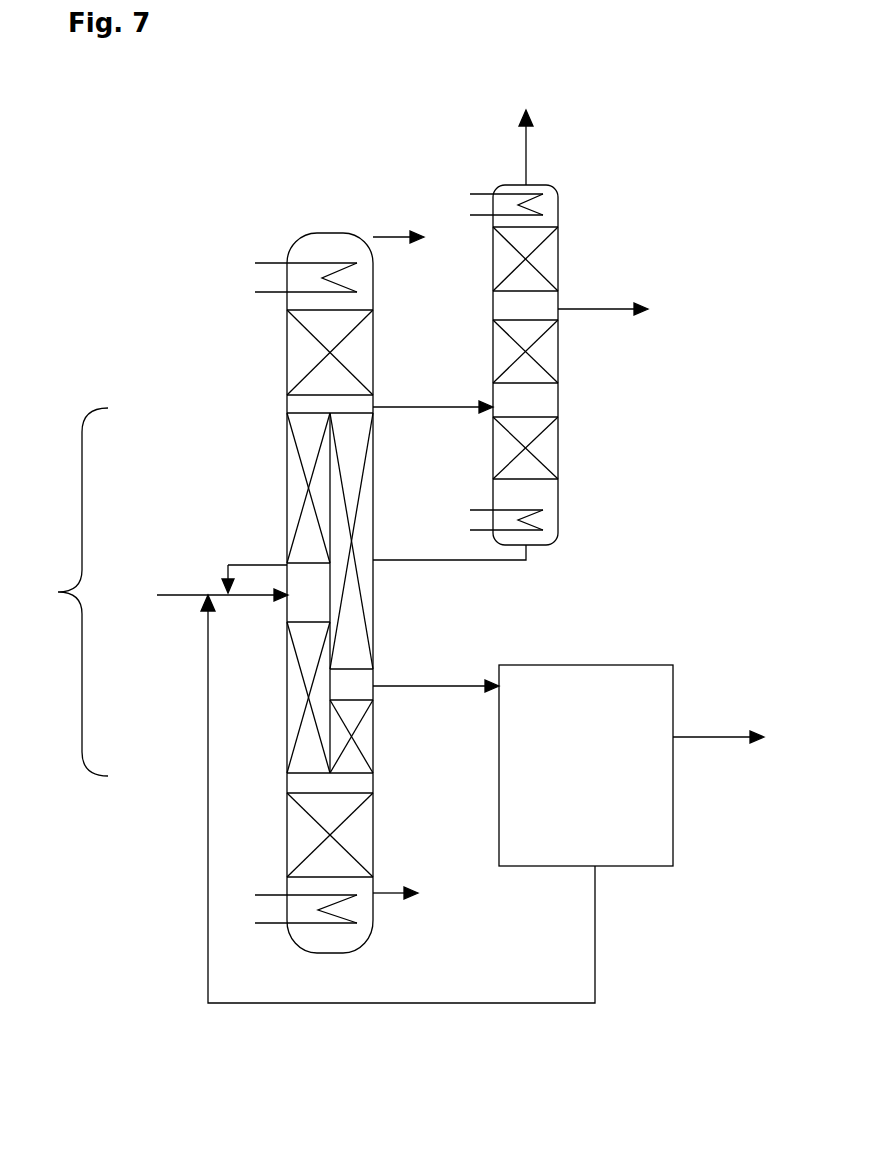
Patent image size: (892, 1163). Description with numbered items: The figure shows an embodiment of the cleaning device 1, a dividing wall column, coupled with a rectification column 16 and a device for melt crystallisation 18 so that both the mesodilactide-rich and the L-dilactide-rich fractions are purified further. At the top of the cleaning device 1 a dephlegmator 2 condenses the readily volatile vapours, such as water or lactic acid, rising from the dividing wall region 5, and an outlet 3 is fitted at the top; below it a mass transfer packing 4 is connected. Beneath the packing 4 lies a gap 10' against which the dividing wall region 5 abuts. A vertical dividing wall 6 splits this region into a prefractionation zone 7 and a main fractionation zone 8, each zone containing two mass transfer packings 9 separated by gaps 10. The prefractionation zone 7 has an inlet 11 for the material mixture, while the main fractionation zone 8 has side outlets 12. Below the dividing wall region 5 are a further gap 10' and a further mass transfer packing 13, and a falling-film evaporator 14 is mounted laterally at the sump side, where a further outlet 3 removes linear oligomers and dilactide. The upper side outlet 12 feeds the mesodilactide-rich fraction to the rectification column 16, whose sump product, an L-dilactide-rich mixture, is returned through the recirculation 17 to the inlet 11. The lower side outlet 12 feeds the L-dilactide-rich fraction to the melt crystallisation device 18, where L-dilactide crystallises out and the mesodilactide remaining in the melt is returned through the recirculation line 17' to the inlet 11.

The cleaning device 1 is at (185, 234).
The dephlegmator 2 is at (326, 260).
The outlet 3 is at (388, 230).
The mass transfer packing 4 is at (297, 327).
The dividing wall region 5 is at (62, 592).
The vertical dividing wall 6 is at (325, 516).
The prefractionation zone 7 is at (290, 687).
The main fractionation zone 8 is at (378, 643).
The mass transfer packing 9 is at (300, 461).
The gap 10 is at (297, 648).
The gap 10' is at (257, 622).
The inlet 11 is at (165, 604).
The side outlet 12 is at (422, 404).
The mass transfer packing 13 is at (300, 838).
The falling-film evaporator 14 is at (318, 912).
The rectification column 16 is at (566, 363).
The recirculation 17 is at (504, 583).
The recirculation line 17' is at (469, 799).
The device for melt crystallisation 18 is at (651, 688).